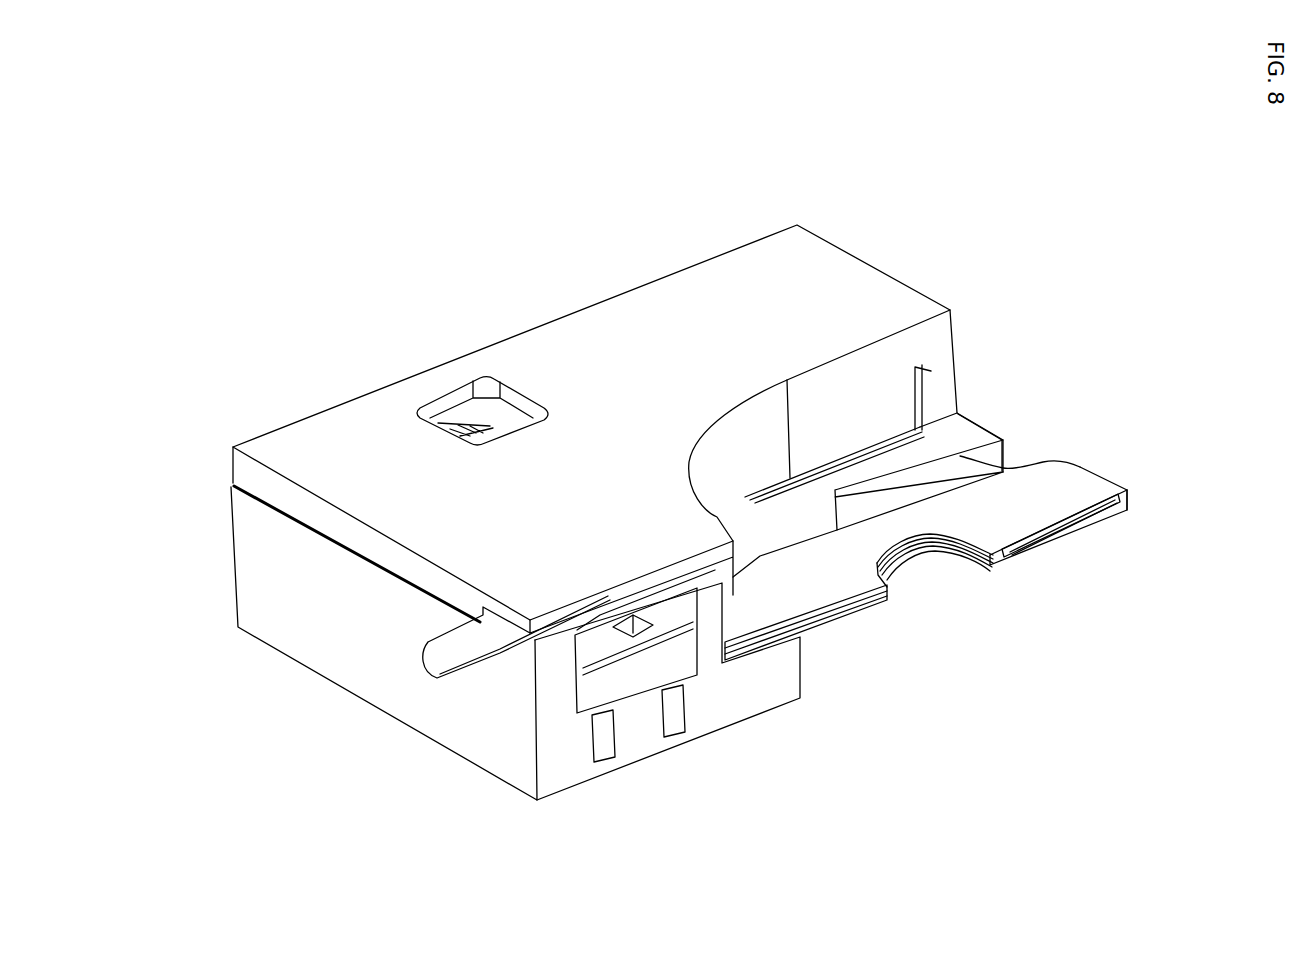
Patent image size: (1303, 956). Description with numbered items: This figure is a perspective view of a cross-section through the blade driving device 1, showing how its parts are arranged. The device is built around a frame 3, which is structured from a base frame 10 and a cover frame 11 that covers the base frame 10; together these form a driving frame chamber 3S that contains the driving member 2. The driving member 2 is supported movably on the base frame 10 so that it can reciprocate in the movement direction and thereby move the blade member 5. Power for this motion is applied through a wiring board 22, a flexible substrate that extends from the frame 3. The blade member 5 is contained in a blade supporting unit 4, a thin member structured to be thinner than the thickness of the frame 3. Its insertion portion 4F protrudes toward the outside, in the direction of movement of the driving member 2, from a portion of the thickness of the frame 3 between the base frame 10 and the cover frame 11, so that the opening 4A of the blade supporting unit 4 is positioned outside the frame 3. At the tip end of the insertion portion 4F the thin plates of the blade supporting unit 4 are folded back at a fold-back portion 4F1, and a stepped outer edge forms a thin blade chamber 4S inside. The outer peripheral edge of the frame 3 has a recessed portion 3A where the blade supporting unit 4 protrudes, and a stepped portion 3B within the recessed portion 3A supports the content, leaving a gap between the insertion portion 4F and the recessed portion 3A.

The blade driving device 1 is at (989, 222).
The driving member 2 is at (625, 658).
The frame 3 is at (155, 473).
The recessed portion 3A is at (970, 473).
The stepped portion 3B is at (975, 425).
The driving frame chamber 3S is at (628, 690).
The blade supporting unit 4 is at (575, 708).
The opening 4A is at (968, 555).
The insertion portion 4F is at (937, 490).
The fold-back portion 4F1 is at (1130, 495).
The thin blade chamber 4S is at (767, 645).
The blade member 5 is at (1050, 544).
The base frame 10 is at (236, 557).
The cover frame 11 is at (235, 462).
The wiring board 22 is at (470, 672).